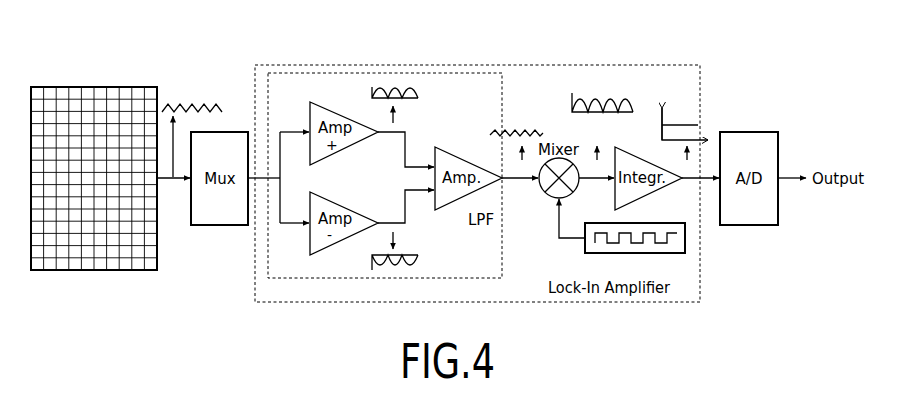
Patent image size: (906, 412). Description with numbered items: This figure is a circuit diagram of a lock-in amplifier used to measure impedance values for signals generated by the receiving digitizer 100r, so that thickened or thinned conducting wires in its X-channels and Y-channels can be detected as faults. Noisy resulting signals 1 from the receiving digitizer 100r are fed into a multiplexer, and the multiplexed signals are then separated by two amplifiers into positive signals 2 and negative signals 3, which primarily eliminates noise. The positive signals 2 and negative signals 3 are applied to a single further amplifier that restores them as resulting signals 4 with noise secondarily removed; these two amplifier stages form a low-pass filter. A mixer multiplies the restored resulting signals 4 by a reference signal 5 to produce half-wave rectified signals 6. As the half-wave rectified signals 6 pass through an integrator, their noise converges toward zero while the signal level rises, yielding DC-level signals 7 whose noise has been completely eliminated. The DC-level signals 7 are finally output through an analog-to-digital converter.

The receiving digitizer 100r is at (93, 86).
The resulting signals 1 is at (192, 118).
The positive signals 2 is at (385, 105).
The negative signals 3 is at (385, 254).
The restored resulting signals 4 is at (505, 140).
The reference signal 5 is at (608, 226).
The half-wave rectified signals 6 is at (589, 126).
The DC-level signals 7 is at (675, 134).